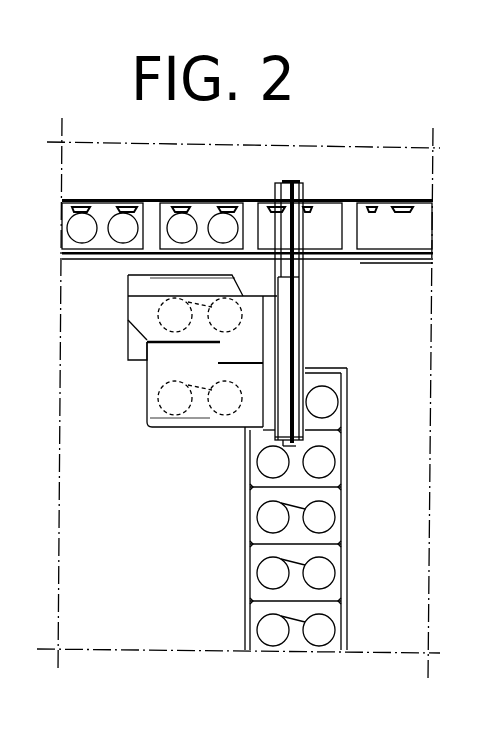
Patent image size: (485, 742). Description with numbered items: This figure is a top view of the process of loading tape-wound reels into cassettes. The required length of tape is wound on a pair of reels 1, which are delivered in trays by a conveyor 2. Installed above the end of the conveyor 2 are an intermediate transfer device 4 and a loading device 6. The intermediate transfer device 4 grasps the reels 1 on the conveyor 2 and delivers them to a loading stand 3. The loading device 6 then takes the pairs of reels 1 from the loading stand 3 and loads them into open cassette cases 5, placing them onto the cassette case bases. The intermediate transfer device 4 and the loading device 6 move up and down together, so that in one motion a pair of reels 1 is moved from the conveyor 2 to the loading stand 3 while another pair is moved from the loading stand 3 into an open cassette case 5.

The reel 1 is at (332, 402).
The conveyor 2 is at (352, 535).
The loading stand 3 is at (133, 345).
The intermediate transfer device 4 is at (137, 401).
The open cassette case 5 is at (238, 215).
The loading device 6 is at (123, 297).